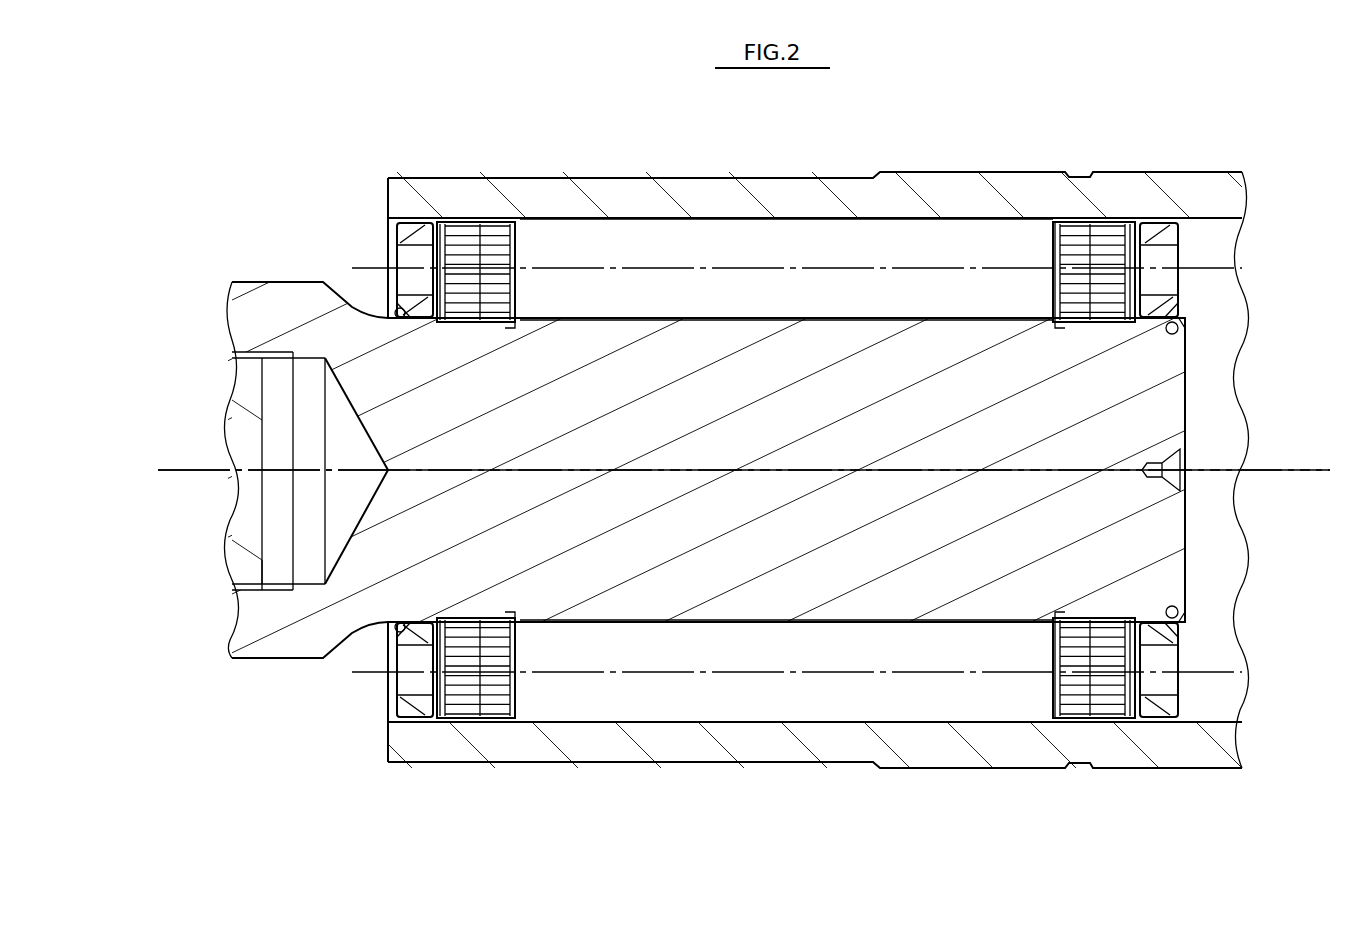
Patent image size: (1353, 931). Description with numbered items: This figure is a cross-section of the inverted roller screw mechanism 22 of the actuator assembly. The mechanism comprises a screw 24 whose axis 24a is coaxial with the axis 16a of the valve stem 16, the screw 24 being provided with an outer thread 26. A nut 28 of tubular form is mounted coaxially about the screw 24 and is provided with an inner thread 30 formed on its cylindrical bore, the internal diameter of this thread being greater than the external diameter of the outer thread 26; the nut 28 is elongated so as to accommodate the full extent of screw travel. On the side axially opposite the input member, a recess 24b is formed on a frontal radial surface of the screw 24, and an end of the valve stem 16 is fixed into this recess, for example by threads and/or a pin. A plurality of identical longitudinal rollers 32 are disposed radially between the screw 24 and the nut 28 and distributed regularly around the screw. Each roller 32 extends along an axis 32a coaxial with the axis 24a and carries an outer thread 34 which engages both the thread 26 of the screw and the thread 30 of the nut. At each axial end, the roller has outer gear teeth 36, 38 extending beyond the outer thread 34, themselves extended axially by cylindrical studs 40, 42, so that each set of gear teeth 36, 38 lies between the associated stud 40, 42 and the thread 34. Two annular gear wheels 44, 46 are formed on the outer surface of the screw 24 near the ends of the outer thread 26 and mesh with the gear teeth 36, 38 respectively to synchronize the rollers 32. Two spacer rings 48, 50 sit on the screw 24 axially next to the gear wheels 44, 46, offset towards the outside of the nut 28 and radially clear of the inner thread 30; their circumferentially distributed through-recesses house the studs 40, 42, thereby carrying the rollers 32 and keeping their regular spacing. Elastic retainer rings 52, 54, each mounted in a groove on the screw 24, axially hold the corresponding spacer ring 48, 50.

The valve stem 16 is at (236, 529).
The axis of the valve stem 16a is at (171, 470).
The inverted roller screw mechanism 22 is at (966, 134).
The screw 24 is at (628, 370).
The axis of the screw 24a is at (171, 470).
The recess 24b is at (248, 590).
The outer thread 26 is at (583, 322).
The nut 28 is at (782, 183).
The inner thread 30 is at (683, 243).
The rollers 32 is at (598, 690).
The axis of the roller 32a is at (357, 674).
The outer thread 34 is at (1015, 727).
The outer gear teeth 36 is at (462, 700).
The outer gear teeth 38 is at (1083, 682).
The cylindrical stud 40 is at (412, 688).
The cylindrical stud 42 is at (1158, 688).
The annular gear wheel 44 is at (450, 324).
The annular gear wheel 46 is at (1113, 322).
The spacer ring 48 is at (412, 240).
The spacer ring 50 is at (1158, 242).
The elastic retainer ring 52 is at (396, 314).
The elastic retainer ring 54 is at (1180, 325).